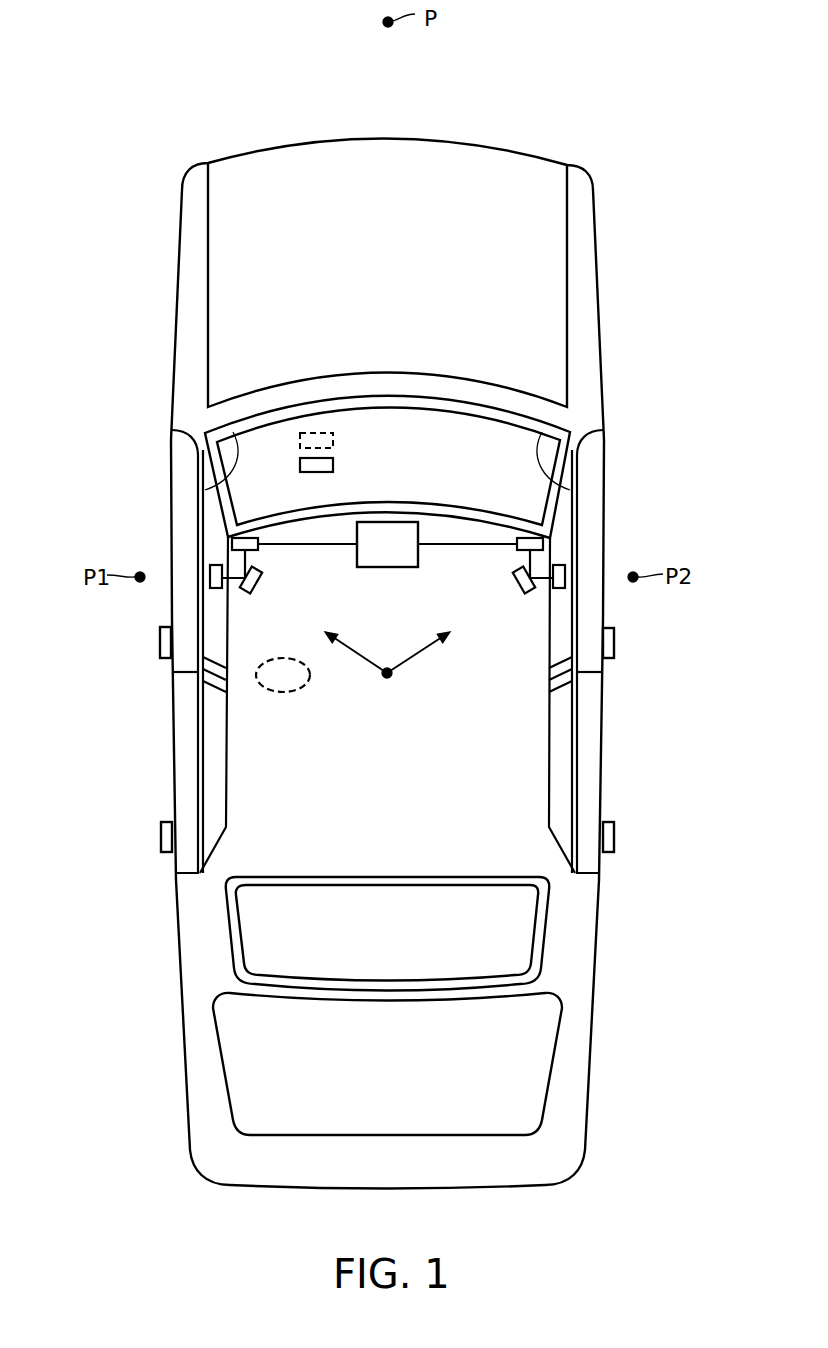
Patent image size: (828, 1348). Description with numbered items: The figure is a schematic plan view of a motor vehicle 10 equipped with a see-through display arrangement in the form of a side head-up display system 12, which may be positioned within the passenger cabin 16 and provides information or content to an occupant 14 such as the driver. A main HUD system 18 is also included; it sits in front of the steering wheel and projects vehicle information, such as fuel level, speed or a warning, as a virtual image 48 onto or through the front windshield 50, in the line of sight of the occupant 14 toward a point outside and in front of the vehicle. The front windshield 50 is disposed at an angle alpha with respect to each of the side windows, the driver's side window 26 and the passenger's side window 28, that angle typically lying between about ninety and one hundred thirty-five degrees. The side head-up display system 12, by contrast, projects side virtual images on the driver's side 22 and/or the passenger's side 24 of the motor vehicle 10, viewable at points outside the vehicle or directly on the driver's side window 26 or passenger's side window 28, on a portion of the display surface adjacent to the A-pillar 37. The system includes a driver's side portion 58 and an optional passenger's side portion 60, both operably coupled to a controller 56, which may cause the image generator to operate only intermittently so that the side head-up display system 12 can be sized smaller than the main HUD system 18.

The motor vehicle 10 is at (100, 1145).
The side head-up display system 12 is at (387, 680).
The occupant 14 is at (283, 692).
The passenger cabin 16 is at (232, 612).
The main HUD system 18 is at (300, 466).
The driver's side 22 is at (172, 612).
The passenger's side 24 is at (605, 603).
The driver's side window 26 is at (212, 645).
The passenger's side window 28 is at (560, 648).
The A-pillar 37 is at (205, 508).
The virtual image 48 is at (334, 441).
The front windshield 50 is at (512, 448).
The controller 56 is at (388, 567).
The driver's side portion 58 is at (225, 557).
The passenger's side portion 60 is at (555, 555).